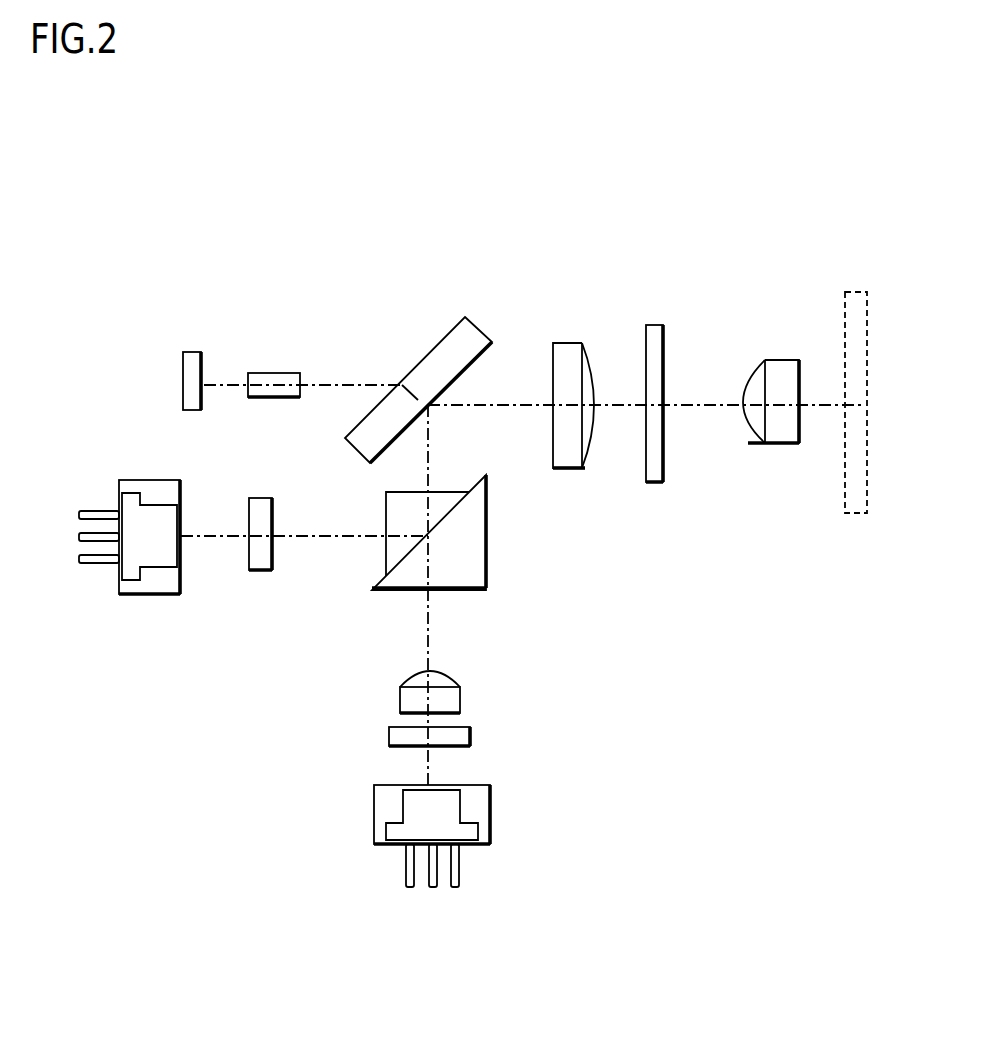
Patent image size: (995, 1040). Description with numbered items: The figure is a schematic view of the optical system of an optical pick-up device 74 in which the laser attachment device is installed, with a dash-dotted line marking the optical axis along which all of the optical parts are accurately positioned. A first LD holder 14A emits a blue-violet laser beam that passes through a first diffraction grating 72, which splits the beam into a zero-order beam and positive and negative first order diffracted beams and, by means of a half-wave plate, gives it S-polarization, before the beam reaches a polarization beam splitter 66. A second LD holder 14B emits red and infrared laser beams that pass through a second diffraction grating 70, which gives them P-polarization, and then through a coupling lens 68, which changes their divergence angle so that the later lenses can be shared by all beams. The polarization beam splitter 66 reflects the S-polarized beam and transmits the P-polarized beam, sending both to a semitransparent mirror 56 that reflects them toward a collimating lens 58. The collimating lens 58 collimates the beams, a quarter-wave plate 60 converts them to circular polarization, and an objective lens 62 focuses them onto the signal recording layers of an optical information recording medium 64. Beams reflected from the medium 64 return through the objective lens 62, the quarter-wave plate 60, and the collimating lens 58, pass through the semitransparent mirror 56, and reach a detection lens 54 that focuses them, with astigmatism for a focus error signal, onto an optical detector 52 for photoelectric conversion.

The first LD holder 14A is at (151, 597).
The second LD holder 14B is at (480, 798).
The optical detector 52 is at (193, 358).
The detection lens 54 is at (287, 372).
The semitransparent mirror 56 is at (462, 338).
The collimating lens 58 is at (569, 340).
The quarter-wave plate 60 is at (655, 325).
The objective lens 62 is at (785, 358).
The optical information recording medium 64 is at (853, 300).
The polarization beam splitter 66 is at (488, 543).
The coupling lens 68 is at (461, 703).
The second diffraction grating 70 is at (471, 737).
The first diffraction grating 72 is at (263, 572).
The optical pick-up device 74 is at (455, 554).